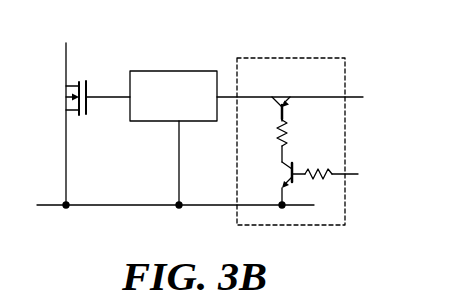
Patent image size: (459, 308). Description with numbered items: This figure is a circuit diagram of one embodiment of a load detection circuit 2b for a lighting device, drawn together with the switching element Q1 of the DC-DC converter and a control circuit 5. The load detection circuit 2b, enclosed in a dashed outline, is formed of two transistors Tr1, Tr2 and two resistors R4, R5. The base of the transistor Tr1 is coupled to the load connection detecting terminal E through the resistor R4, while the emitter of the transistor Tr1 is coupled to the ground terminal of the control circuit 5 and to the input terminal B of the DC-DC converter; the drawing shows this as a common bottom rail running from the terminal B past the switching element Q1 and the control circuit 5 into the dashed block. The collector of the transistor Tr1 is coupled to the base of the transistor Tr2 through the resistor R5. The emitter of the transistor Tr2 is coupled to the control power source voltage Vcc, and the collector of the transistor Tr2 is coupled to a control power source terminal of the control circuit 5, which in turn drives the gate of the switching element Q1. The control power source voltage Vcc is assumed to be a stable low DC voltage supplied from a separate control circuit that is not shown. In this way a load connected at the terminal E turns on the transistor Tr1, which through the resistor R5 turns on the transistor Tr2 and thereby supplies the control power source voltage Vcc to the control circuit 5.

The control circuit 5 is at (158, 70).
The load detection circuit 2b is at (277, 58).
The switching element Q1 is at (80, 98).
The transistor Tr1 is at (276, 183).
The transistor Tr2 is at (280, 95).
The resistor R4 is at (331, 161).
The resistor R5 is at (267, 141).
The input terminal B is at (23, 204).
The load connection detecting terminal E is at (367, 176).
The control power source voltage Vcc is at (382, 97).